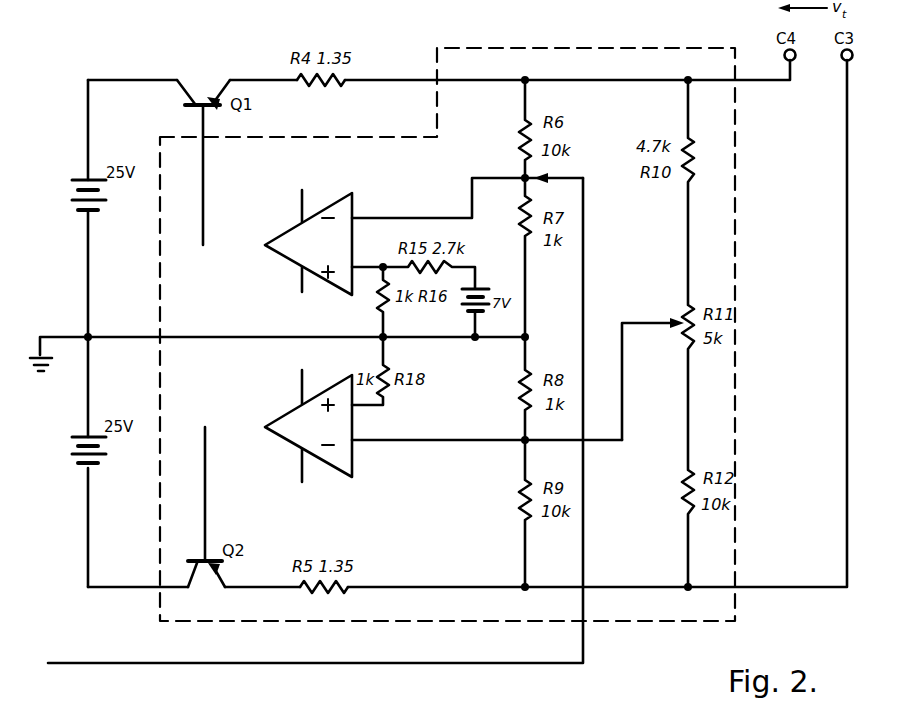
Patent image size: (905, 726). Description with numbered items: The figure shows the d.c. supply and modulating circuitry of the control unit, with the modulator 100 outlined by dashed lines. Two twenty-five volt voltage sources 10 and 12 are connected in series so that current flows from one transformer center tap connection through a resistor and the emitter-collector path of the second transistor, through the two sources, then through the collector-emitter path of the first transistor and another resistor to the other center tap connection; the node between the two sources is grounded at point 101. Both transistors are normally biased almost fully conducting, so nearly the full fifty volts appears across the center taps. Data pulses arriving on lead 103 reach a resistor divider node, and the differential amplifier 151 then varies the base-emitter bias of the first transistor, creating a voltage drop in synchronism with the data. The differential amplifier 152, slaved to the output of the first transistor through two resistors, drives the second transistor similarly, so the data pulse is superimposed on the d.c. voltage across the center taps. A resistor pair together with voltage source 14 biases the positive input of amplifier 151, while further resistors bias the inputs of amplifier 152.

The voltage source 10 is at (85, 180).
The voltage source 12 is at (84, 437).
The voltage source 14 is at (481, 287).
The modulator 100 is at (738, 621).
The ground node 101 is at (84, 332).
The lead 103 is at (408, 663).
The differential amplifier 151 is at (335, 200).
The differential amplifier 152 is at (340, 375).